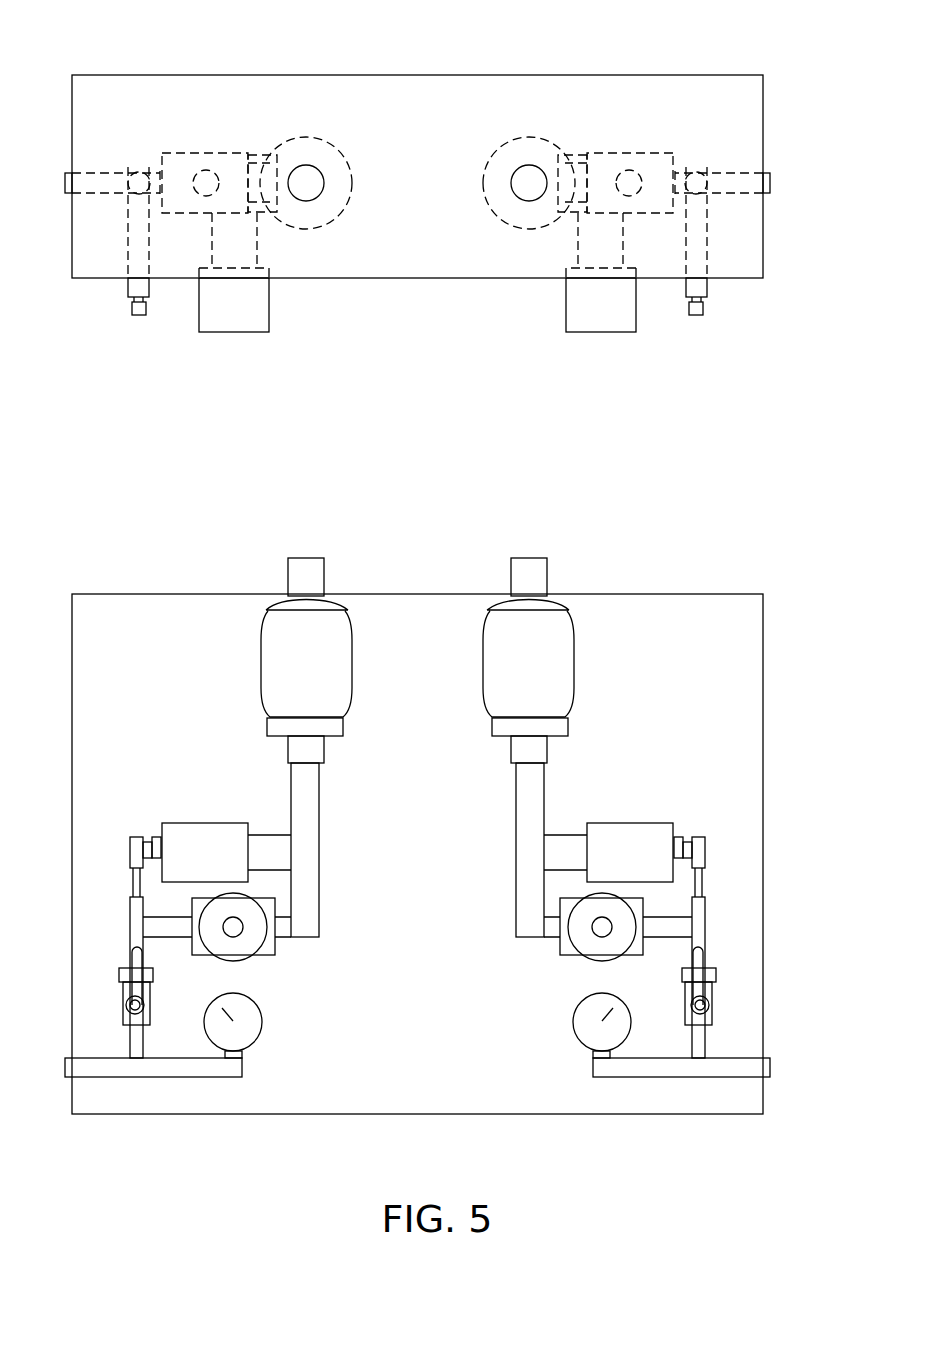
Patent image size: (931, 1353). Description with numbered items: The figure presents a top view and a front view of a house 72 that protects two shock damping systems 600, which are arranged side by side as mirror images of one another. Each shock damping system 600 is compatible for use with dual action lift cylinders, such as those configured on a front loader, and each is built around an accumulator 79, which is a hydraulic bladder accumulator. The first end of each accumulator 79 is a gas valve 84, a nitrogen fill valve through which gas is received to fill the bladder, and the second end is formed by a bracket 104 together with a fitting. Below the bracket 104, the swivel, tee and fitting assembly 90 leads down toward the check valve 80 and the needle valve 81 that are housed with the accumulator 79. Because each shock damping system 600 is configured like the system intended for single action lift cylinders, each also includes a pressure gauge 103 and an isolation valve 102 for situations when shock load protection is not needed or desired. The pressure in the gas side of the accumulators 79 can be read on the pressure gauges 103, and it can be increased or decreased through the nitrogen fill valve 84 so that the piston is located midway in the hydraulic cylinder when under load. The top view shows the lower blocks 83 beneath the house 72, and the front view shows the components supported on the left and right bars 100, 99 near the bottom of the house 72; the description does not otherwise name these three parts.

The shock damping system 600 is at (770, 312).
The house 72 is at (777, 99).
The accumulator 79 is at (335, 150).
The check valve 80 is at (178, 165).
The needle valve 81 is at (212, 241).
The base block 83 is at (232, 309).
The gas valve 84 is at (318, 192).
The swivel, tee and fitting assembly 90 is at (319, 787).
The right mounting bar 99 is at (760, 1068).
The left mounting bar 100 is at (75, 1068).
The isolation valve 102 is at (128, 238).
The pressure gauge 103 is at (257, 1036).
The bracket 104 is at (279, 729).